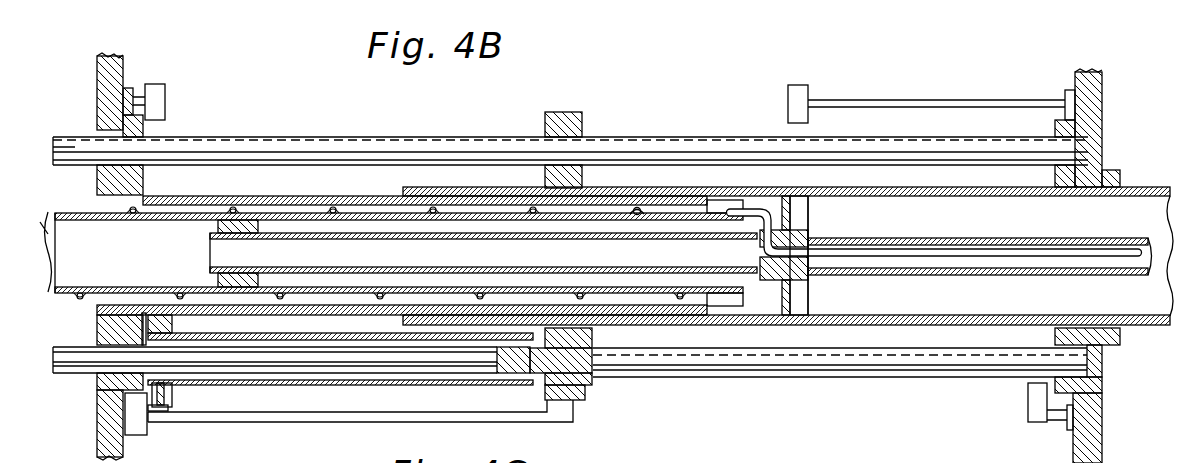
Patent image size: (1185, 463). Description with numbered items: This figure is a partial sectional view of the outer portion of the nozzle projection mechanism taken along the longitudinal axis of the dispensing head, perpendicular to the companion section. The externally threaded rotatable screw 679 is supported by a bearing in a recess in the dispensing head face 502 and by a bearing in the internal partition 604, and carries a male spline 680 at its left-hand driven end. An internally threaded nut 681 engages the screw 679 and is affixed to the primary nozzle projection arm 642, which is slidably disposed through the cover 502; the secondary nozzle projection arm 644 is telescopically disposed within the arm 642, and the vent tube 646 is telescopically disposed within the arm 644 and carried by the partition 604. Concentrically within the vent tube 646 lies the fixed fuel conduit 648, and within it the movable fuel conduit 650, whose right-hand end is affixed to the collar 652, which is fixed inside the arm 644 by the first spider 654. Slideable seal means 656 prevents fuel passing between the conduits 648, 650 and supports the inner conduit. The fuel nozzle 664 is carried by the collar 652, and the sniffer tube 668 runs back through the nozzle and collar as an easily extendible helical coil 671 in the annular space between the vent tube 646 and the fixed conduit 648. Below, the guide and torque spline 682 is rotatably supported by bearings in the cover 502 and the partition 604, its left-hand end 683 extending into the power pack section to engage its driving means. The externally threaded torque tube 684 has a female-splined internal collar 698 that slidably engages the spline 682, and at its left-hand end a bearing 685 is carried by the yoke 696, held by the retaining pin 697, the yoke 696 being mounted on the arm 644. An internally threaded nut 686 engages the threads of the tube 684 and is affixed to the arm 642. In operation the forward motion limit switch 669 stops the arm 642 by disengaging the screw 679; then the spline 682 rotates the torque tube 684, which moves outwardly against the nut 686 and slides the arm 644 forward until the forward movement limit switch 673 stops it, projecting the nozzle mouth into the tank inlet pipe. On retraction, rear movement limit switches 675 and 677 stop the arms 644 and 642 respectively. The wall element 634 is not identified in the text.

The dispensing head face 502 is at (1088, 70).
The internal partition 604 is at (122, 80).
The right end wall 634 is at (1074, 85).
The primary nozzle projection arm 642 is at (402, 189).
The secondary nozzle projection arm 644 is at (282, 195).
The vent tube 646 is at (97, 300).
The fixed fuel conduit 648 is at (150, 221).
The movable fuel conduit 650 is at (208, 253).
The collar 652 is at (770, 281).
The first spider 654 is at (800, 300).
The slideable seal means 656 is at (216, 280).
The fuel nozzle 664 is at (992, 275).
The sniffer tube 668 is at (890, 243).
The forward motion limit switch 669 is at (806, 85).
The helical coil 671 is at (641, 208).
The forward movement limit switch 673 is at (1027, 397).
The rear movement limit switch 675 is at (137, 436).
The rear movement limit switch 677 is at (167, 101).
The externally threaded rotatable screw 679 is at (677, 136).
The male spline 680 is at (62, 135).
The internally threaded nut 681 is at (544, 121).
The guide and torque spline 682 is at (880, 378).
The left-hand end of spline 683 is at (62, 374).
The secondary projection arm torque tube 684 is at (488, 382).
The bearing 685 is at (173, 389).
The internally threaded nut 686 is at (586, 396).
The yoke 696 is at (175, 400).
The retaining pin 697 is at (162, 412).
The female-splined internal collar 698 is at (594, 342).